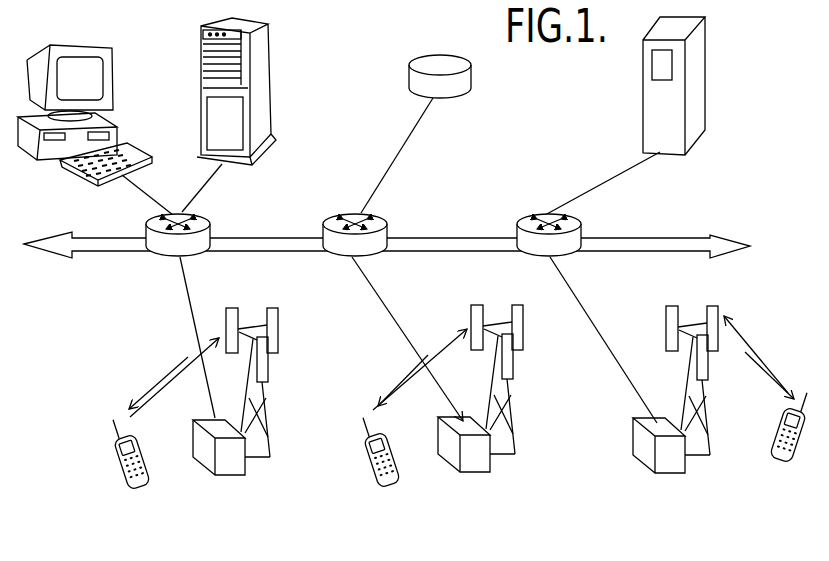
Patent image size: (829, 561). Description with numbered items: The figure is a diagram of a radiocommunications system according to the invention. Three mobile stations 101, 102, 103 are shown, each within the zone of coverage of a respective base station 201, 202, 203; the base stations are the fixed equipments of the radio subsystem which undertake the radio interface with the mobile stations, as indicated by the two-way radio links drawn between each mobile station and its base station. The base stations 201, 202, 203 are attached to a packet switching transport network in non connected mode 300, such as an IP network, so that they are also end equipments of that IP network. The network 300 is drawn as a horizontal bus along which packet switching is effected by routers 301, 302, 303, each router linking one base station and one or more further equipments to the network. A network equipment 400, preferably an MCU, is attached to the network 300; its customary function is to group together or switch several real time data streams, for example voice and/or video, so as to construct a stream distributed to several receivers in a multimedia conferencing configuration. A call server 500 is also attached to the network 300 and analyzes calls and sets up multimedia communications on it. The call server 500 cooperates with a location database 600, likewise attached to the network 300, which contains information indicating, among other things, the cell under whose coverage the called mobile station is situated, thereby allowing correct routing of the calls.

The mobile station 101 is at (116, 470).
The mobile station 102 is at (780, 462).
The mobile station 103 is at (379, 477).
The base station 201 is at (230, 477).
The base station 202 is at (667, 475).
The base station 203 is at (478, 475).
The packet switching transport network 300 is at (449, 239).
The router 301 is at (158, 256).
The router 302 is at (322, 222).
The router 303 is at (531, 214).
The network equipment 400 is at (708, 88).
The call server 500 is at (272, 62).
The location database 600 is at (472, 83).